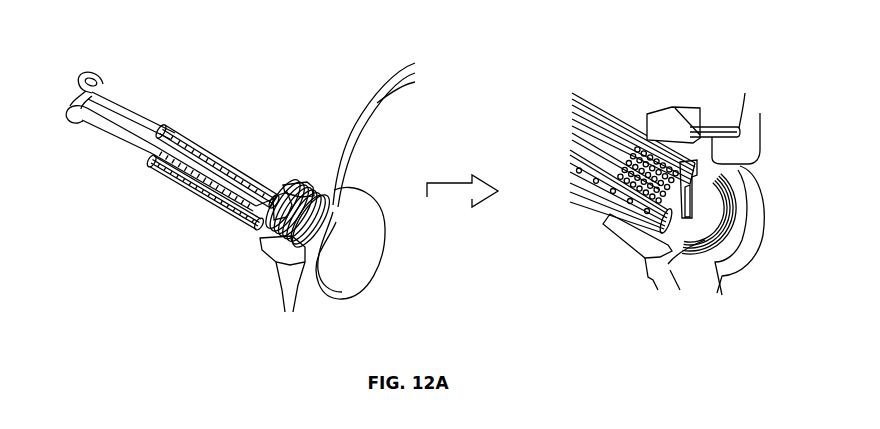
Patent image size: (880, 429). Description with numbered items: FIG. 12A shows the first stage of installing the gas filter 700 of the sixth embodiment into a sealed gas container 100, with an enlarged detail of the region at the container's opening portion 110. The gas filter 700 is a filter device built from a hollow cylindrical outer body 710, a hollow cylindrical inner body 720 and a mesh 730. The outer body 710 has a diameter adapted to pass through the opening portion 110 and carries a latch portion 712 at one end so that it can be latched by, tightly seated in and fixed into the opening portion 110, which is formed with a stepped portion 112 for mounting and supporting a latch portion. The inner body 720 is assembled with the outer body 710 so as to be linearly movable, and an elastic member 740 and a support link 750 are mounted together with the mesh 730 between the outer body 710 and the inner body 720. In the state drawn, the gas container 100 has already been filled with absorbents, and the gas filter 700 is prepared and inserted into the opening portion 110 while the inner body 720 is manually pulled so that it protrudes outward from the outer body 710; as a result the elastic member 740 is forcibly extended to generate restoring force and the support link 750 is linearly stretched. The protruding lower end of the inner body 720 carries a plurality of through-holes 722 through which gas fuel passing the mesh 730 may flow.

The gas container 100 is at (337, 163).
The opening portion 110 is at (333, 205).
The stepped portion 112 is at (690, 124).
The gas filter 700 is at (175, 141).
The outer body 710 is at (125, 107).
The latch portion 712 is at (88, 71).
The inner body 720 is at (224, 207).
The through-holes 722 is at (647, 114).
The mesh 730 is at (234, 163).
The elastic member 740 is at (163, 173).
The support link 750 is at (188, 187).